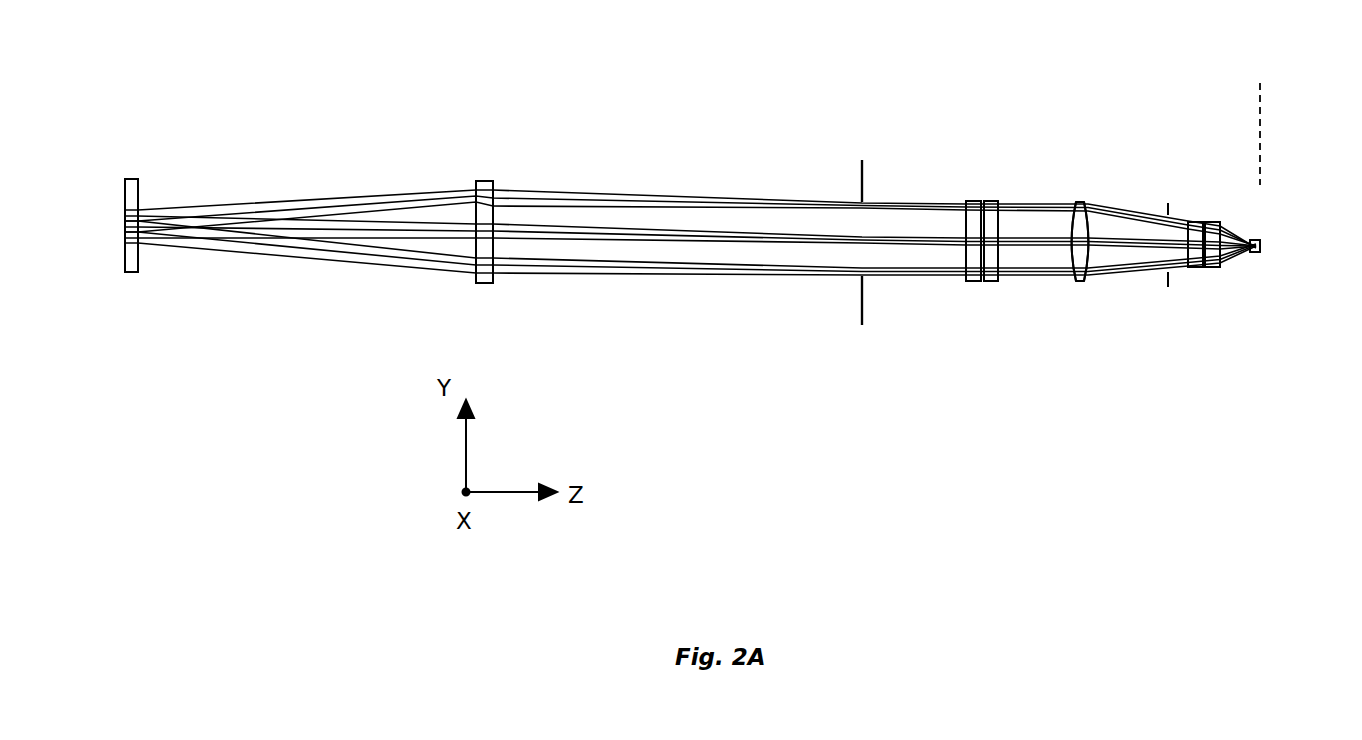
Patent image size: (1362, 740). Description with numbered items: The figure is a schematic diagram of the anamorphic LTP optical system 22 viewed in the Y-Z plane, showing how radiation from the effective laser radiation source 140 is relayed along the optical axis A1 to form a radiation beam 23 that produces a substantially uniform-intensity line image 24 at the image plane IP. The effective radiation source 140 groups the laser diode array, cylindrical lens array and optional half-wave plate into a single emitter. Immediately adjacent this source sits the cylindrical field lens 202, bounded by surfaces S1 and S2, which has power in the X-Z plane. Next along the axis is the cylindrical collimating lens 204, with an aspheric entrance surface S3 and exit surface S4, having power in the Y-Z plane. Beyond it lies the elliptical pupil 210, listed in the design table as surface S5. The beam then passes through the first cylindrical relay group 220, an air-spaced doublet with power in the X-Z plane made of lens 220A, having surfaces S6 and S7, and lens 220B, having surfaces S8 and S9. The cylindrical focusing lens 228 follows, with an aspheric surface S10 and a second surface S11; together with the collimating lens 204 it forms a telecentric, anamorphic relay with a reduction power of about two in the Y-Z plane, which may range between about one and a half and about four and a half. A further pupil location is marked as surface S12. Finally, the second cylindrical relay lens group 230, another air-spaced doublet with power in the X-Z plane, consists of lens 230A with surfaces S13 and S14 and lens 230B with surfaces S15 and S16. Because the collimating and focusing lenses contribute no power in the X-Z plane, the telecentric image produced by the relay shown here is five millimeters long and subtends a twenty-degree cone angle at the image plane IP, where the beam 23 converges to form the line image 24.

The LTP optical system 22 is at (692, 87).
The effective laser radiation source 140 is at (125, 207).
The cylindrical field lens 202 is at (132, 179).
The cylindrical collimating lens 204 is at (485, 180).
The elliptical pupil 210 is at (860, 180).
The first cylindrical relay group 220 is at (975, 182).
The lens 220A is at (975, 201).
The lens 220B is at (997, 201).
The cylindrical focusing lens 228 is at (1082, 200).
The second cylindrical relay lens group 230 is at (1174, 199).
The lens 230A is at (1190, 222).
The lens 230B is at (1222, 222).
The image plane IP is at (1262, 135).
The radiation beam 23 is at (1243, 233).
The line image 24 is at (1263, 247).
The optical axis A1 is at (365, 243).
The surface S1 is at (125, 256).
The surface S2 is at (139, 258).
The surface S3 is at (476, 283).
The surface S4 is at (494, 283).
The surface S5 is at (860, 298).
The surface S6 is at (966, 255).
The surface S7 is at (981, 262).
The surface S8 is at (984, 266).
The surface S9 is at (998, 268).
The surface S10 is at (1073, 268).
The surface S11 is at (1089, 270).
The surface S12 is at (1167, 280).
The surface S13 is at (1188, 270).
The surface S14 is at (1203, 268).
The surface S15 is at (1206, 268).
The surface S16 is at (1221, 268).